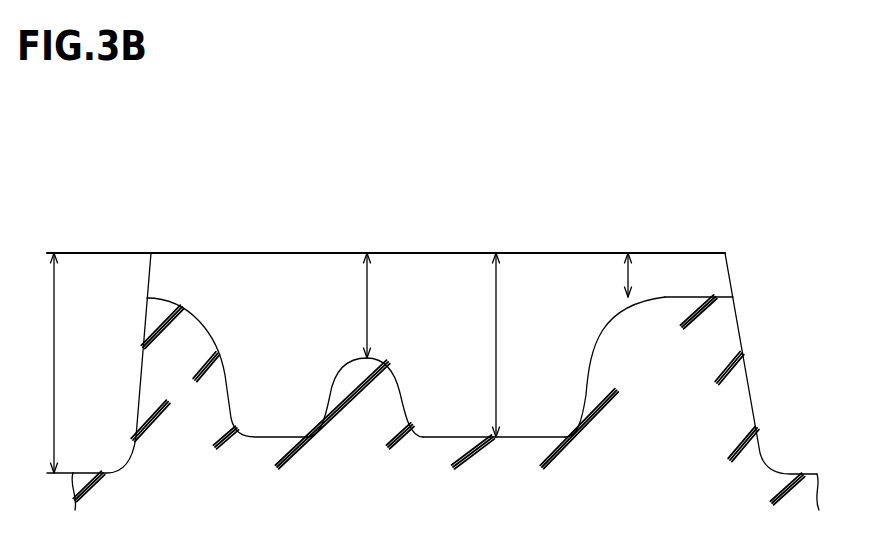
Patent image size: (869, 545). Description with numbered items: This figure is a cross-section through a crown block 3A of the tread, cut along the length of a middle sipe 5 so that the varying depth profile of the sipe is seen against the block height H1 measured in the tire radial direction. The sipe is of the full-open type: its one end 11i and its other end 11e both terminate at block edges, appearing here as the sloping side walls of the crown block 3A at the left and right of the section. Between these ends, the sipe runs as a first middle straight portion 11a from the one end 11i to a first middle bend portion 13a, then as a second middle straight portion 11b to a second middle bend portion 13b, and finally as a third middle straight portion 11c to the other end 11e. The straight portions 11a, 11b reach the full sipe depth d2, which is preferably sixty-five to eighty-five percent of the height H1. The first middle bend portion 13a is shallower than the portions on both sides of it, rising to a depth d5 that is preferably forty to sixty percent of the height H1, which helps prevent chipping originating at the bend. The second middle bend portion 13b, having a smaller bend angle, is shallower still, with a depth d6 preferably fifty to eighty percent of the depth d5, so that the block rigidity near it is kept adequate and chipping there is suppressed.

The crown block 3A is at (448, 309).
The decoration portion (sidewall) 5 is at (479, 142).
The other end of the middle sipe 11e is at (725, 253).
The one end of the middle sipe 11i is at (151, 253).
The first middle straight portion 11a is at (232, 296).
The first middle bend portion 13a is at (350, 322).
The second middle straight portion 11b is at (520, 306).
The second middle bend portion 13b is at (618, 290).
The third middle straight portion 11c is at (704, 236).
The height of the crown block H1 is at (35, 363).
The depth of the first middle bend portion d5 is at (367, 306).
The depth of the middle sipe d2 is at (495, 345).
The depth of the second middle bend portion d6 is at (627, 283).